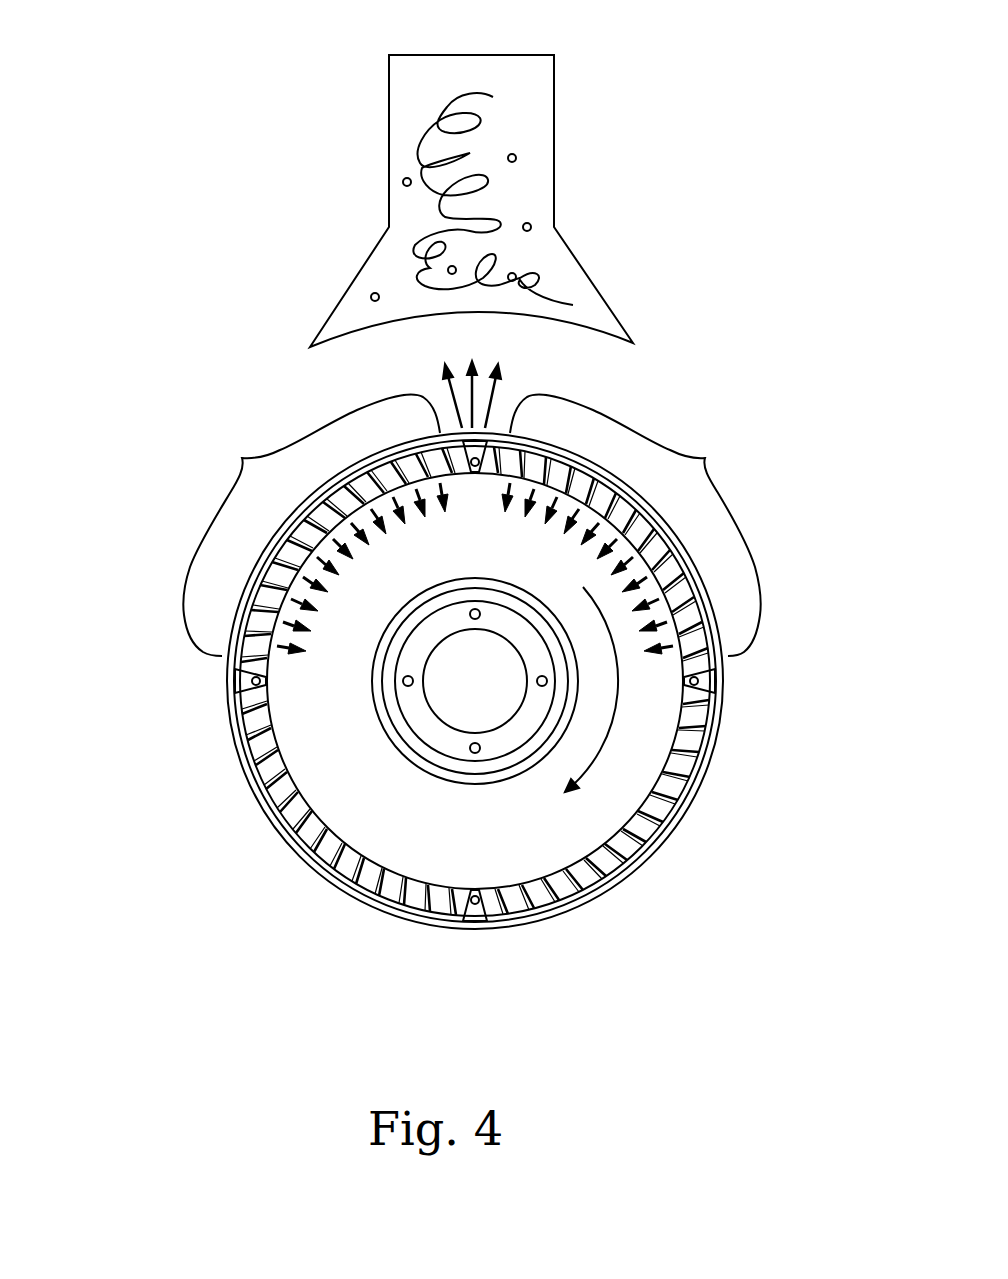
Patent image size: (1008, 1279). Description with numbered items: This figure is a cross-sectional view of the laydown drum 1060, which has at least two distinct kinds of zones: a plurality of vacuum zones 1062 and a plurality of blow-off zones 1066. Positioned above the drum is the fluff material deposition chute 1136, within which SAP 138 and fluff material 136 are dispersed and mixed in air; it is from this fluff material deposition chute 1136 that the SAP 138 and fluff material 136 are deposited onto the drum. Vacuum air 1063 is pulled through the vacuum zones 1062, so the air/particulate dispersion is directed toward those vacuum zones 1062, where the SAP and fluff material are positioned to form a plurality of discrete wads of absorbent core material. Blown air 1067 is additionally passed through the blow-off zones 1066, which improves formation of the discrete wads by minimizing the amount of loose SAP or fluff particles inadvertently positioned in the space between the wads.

The fluff material 136 is at (458, 98).
The SAP 138 is at (515, 154).
The fluff material deposition chute 1136 is at (383, 273).
The laydown drum 1060 is at (178, 405).
The vacuum zones 1062 is at (242, 458).
The vacuum air 1063 is at (268, 702).
The blow-off zones 1066 is at (495, 405).
The blown air 1067 is at (462, 422).